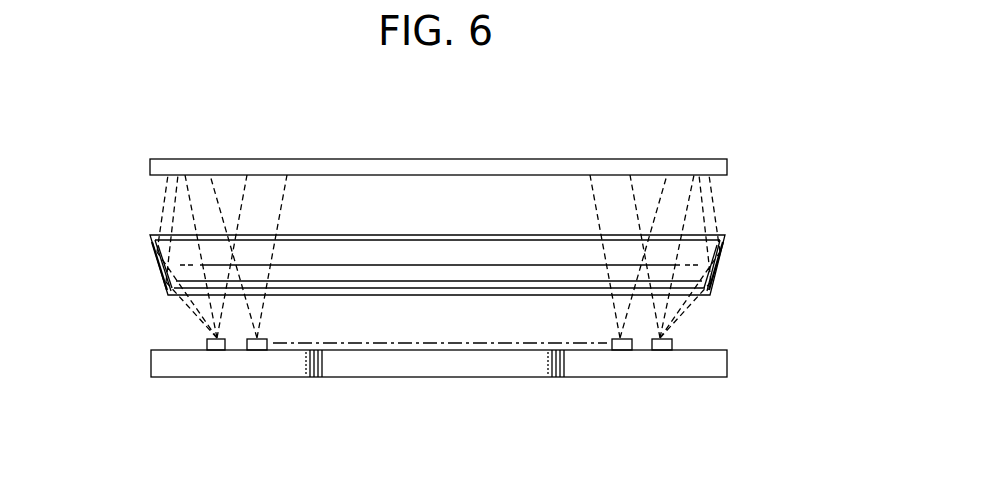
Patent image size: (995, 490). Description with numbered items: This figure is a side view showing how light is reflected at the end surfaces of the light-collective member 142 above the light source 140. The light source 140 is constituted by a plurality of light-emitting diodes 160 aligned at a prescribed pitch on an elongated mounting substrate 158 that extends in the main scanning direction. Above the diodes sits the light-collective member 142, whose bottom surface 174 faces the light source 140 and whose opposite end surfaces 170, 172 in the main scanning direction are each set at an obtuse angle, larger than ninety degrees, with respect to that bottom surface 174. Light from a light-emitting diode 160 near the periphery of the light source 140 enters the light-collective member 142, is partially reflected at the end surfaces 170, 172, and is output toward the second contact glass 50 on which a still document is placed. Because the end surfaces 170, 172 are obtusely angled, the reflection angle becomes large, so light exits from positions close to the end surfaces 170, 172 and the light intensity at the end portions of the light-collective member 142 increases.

The second contact glass 50 is at (636, 159).
The light source 140 is at (401, 377).
The light-collective member 142 is at (496, 262).
The mounting substrate 158 is at (525, 362).
The light-emitting diodes 160 is at (218, 350).
The end surface 170 is at (160, 273).
The end surface 172 is at (712, 271).
The bottom surface 174 is at (362, 300).